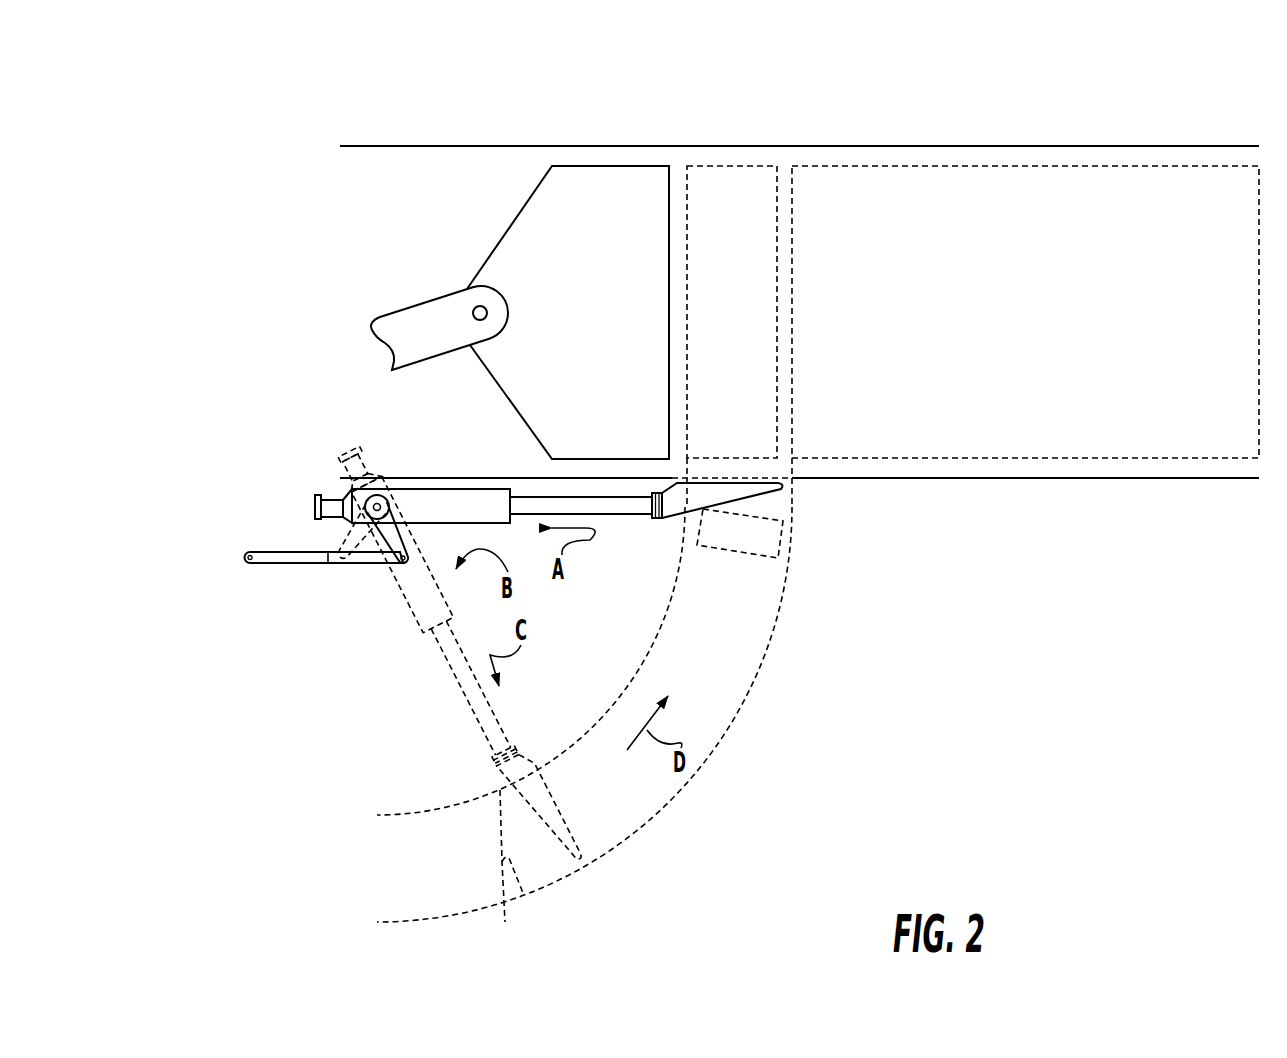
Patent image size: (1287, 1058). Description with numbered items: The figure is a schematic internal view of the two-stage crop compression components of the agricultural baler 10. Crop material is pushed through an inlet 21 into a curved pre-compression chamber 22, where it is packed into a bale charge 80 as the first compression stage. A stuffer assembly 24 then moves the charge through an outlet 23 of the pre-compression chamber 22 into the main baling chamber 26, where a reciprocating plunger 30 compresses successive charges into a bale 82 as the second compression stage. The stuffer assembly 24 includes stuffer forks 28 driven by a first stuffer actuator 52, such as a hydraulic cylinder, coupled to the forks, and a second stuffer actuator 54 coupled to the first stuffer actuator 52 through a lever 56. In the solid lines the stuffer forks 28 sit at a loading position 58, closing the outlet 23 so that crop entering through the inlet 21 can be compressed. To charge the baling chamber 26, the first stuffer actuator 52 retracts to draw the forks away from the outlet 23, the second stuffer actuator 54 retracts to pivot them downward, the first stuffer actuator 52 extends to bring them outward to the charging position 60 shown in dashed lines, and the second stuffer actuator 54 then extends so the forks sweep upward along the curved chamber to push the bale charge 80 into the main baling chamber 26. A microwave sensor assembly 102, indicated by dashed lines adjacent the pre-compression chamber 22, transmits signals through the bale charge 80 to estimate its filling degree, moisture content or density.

The agricultural baler 10 is at (231, 127).
The main baling chamber 26 is at (1066, 160).
The plunger 30 is at (606, 318).
The bale charge 80 is at (744, 318).
The bale 82 is at (1012, 318).
The stuffer forks 28 is at (697, 490).
The outlet 23 is at (775, 477).
The stuffer assembly 24 is at (410, 450).
The first stuffer actuator 52 is at (457, 498).
The loading position 58 is at (651, 529).
The lever 56 is at (390, 535).
The second stuffer actuator 54 is at (287, 558).
The charging position 60 is at (468, 766).
The sensor assembly 102 is at (787, 543).
The pre-compression chamber 22 is at (735, 650).
The inlet 21 is at (509, 871).